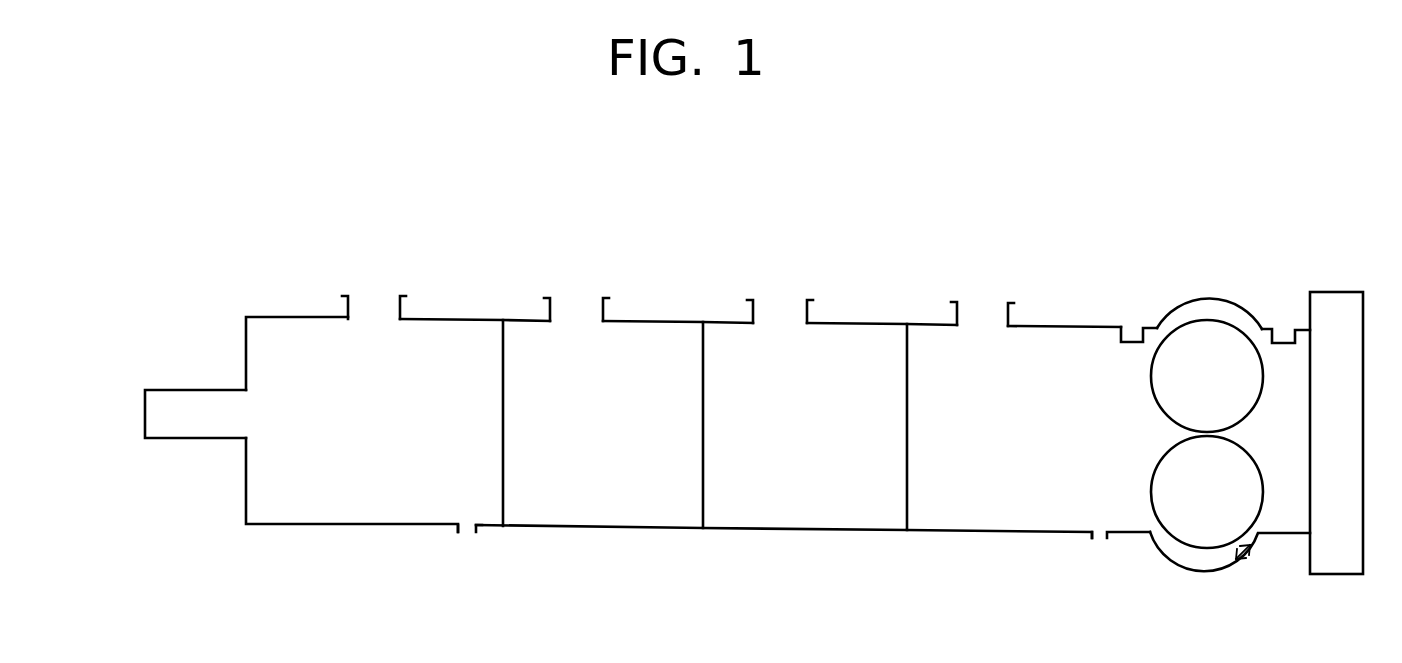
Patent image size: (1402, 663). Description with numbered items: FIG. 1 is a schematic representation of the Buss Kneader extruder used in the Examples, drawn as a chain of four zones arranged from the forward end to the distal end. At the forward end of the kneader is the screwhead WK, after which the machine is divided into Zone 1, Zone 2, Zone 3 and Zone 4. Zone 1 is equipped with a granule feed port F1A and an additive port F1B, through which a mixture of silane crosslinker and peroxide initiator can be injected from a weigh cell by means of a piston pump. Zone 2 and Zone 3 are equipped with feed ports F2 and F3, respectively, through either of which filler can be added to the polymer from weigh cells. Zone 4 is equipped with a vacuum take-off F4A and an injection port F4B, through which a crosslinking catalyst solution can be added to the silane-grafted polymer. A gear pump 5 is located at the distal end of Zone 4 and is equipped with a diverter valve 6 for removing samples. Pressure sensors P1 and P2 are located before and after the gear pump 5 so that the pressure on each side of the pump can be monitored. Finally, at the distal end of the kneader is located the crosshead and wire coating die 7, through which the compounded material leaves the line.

The screwhead WK is at (163, 410).
The Zone 1 is at (373, 505).
The Zone 2 is at (613, 505).
The Zone 3 is at (805, 513).
The Zone 4 is at (988, 508).
The granule feed port F1A is at (373, 303).
The additive port F1B is at (467, 529).
The feed port F2 is at (577, 310).
The feed port F3 is at (773, 312).
The vacuum take-off F4A is at (978, 318).
The injection port F4B is at (1100, 538).
The pressure sensor P1 is at (1132, 335).
The pressure sensor P2 is at (1285, 335).
The gear pump 5 is at (1205, 310).
The diverter valve 6 is at (1243, 553).
The crosshead and wire coating die 7 is at (1345, 548).